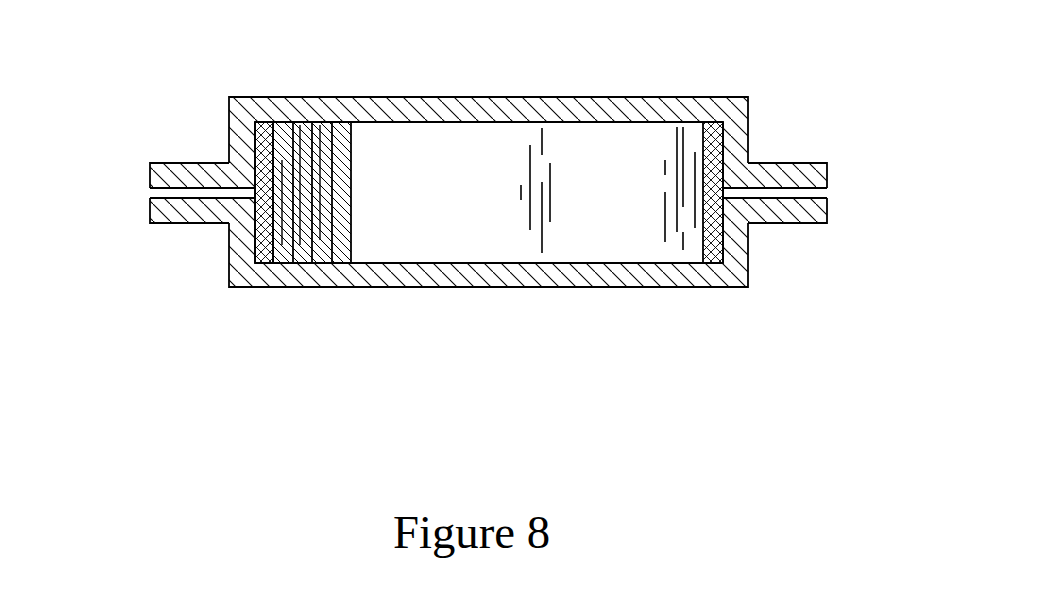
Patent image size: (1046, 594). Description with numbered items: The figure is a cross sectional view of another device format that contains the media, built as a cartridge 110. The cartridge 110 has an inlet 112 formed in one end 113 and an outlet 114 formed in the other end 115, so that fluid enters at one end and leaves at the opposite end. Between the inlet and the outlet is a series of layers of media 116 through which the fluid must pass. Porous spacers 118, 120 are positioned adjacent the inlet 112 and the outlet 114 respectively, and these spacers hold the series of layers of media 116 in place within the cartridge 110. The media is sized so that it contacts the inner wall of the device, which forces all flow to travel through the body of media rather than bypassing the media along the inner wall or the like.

The cartridge 110 is at (285, 78).
The inlet 112 is at (157, 192).
The one end 113 is at (187, 175).
The outlet 114 is at (818, 195).
The other end 115 is at (793, 223).
The series of layers of media 116 is at (310, 228).
The porous spacer 118 is at (267, 232).
The porous spacer 120 is at (710, 240).